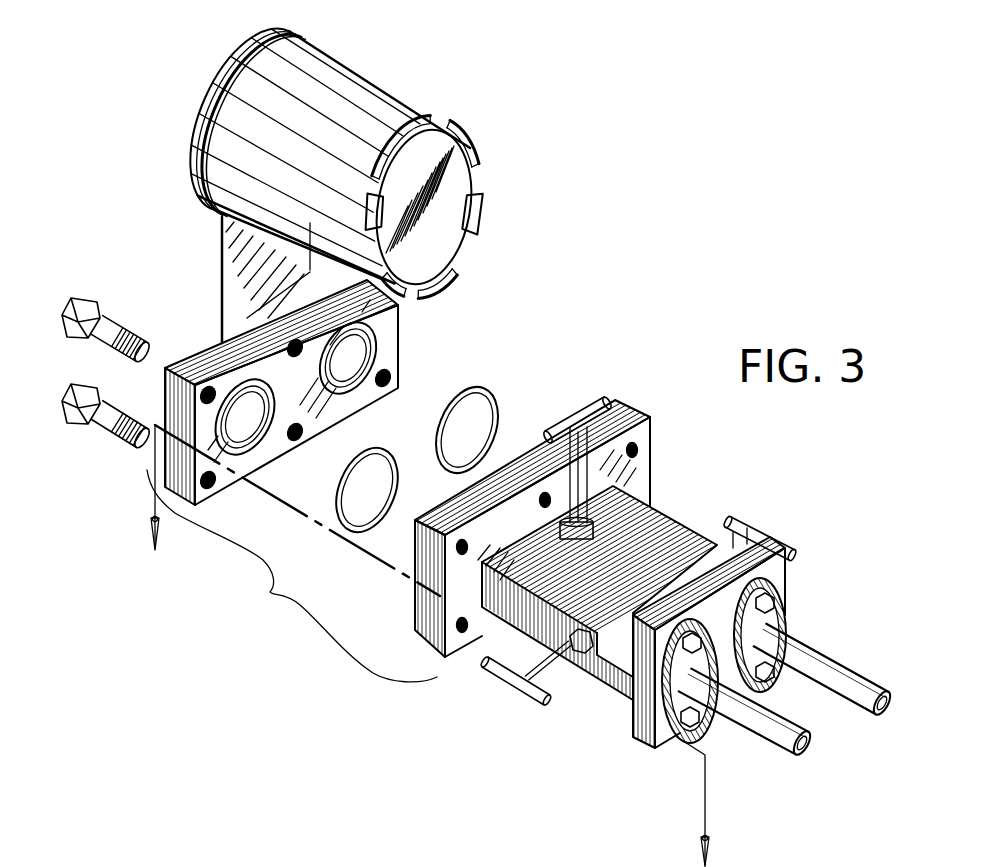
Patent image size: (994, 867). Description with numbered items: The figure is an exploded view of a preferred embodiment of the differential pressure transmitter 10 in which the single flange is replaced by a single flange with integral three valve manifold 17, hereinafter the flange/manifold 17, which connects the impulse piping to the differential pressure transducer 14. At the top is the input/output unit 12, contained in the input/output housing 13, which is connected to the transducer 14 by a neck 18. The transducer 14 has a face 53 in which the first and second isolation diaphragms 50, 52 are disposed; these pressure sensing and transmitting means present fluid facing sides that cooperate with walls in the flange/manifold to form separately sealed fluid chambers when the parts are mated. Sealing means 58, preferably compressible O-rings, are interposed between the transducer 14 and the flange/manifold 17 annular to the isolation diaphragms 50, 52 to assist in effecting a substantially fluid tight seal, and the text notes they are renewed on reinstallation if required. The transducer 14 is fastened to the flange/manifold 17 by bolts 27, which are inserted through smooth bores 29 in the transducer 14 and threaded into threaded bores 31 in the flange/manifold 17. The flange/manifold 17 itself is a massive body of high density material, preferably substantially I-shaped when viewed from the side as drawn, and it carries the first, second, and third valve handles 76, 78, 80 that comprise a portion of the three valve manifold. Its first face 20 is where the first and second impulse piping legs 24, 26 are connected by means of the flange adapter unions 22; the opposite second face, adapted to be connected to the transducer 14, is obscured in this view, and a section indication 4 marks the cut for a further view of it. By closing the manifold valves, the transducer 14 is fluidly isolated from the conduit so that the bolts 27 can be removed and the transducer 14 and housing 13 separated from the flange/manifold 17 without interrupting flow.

The differential pressure transmitter 10 is at (647, 306).
The input/output unit 12 is at (397, 92).
The input/output housing 13 is at (362, 64).
The differential pressure transducer 14 is at (218, 350).
The single flange with integral three valve manifold 17 is at (657, 517).
The neck 18 is at (245, 270).
The first face 20 is at (787, 578).
The flange adapter unions 22 is at (787, 612).
The first impulse piping leg 24 is at (858, 660).
The second impulse piping leg 26 is at (763, 745).
The bolts 27 is at (113, 403).
The smooth bores 29 is at (200, 394).
The threaded bores 31 is at (458, 626).
The section line 4- 4 is at (428, 645).
The first isolation diaphragm 50 is at (358, 347).
The second isolation diaphragm 52 is at (253, 418).
The face 53 is at (316, 412).
The sealing means 58 is at (440, 427).
The first valve handle 76 is at (767, 532).
The second valve handle 78 is at (494, 685).
The third valve handle 80 is at (587, 405).